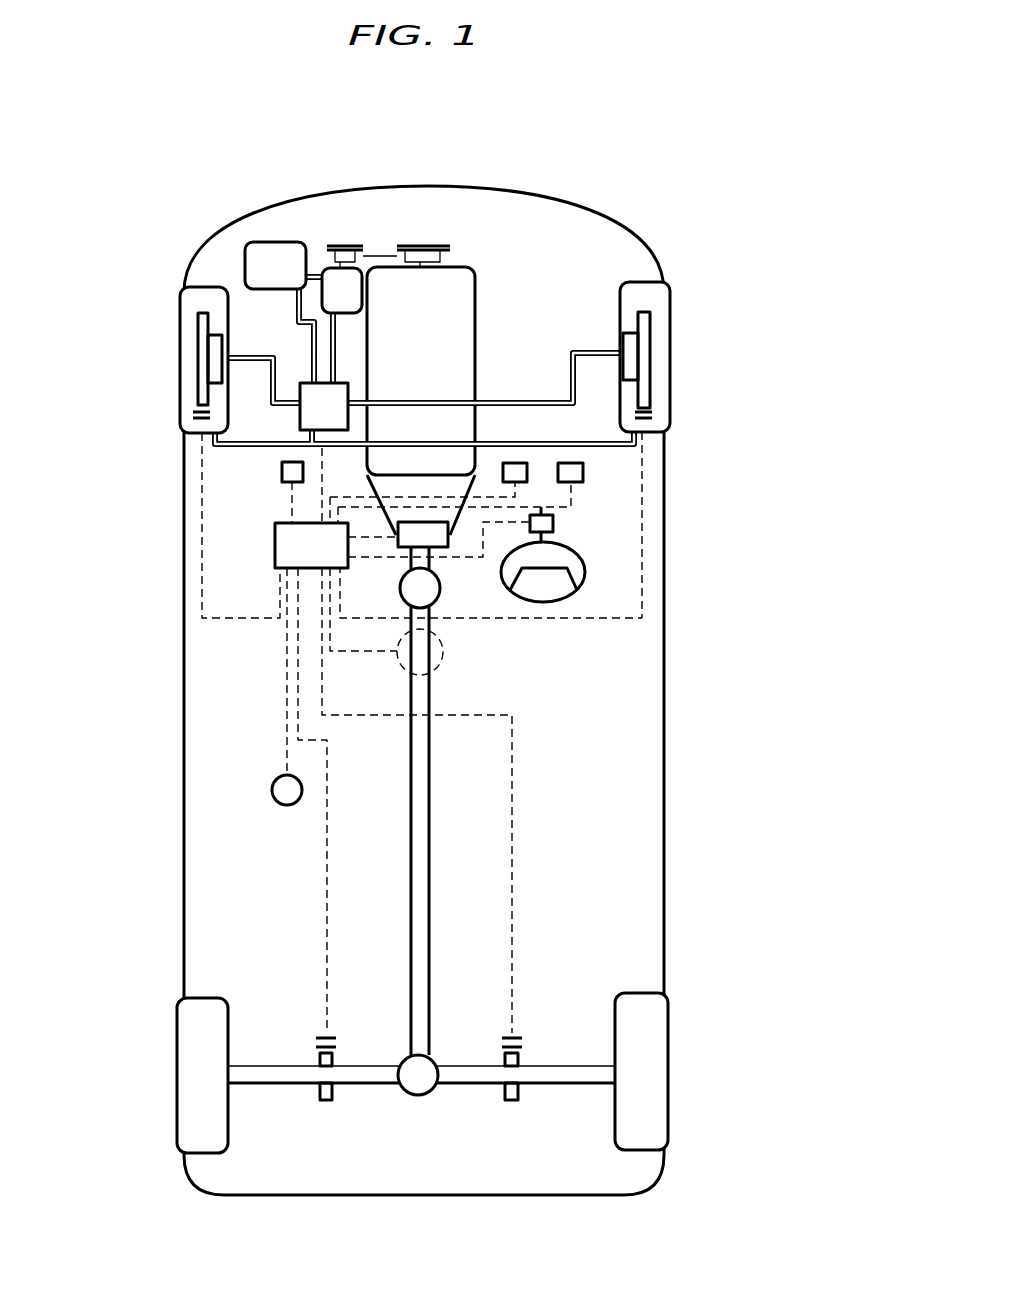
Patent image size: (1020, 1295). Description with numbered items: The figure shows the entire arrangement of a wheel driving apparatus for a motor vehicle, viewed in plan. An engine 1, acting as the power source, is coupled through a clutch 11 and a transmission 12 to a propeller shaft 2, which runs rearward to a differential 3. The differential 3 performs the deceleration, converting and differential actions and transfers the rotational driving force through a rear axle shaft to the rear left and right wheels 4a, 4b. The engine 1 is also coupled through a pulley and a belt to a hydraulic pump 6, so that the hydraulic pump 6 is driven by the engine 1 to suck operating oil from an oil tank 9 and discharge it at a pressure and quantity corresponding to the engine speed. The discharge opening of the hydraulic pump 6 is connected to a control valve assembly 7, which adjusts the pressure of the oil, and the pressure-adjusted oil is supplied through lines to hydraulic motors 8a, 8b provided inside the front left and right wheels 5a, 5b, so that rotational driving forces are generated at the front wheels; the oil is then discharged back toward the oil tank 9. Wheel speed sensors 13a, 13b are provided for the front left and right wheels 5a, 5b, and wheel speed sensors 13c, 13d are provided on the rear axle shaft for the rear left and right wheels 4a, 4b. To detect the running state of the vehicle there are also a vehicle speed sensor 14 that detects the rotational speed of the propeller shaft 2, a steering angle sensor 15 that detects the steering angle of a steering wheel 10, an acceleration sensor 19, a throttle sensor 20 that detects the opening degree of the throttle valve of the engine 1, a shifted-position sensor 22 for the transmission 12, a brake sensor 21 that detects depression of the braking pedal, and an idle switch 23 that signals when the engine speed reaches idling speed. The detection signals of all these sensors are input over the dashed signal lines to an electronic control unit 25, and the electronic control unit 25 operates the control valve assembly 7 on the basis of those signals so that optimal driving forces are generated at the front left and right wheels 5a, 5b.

The engine 1 is at (463, 298).
The propeller shaft 2 is at (422, 832).
The differential 3 is at (418, 1082).
The rear left wheel 4a is at (184, 1033).
The rear right wheel 4b is at (657, 1051).
The front left wheel 5a is at (188, 312).
The front right wheel 5b is at (655, 297).
The hydraulic pump 6 is at (333, 280).
The control valve assembly 7 is at (337, 392).
The hydraulic motor 8a is at (215, 358).
The hydraulic motor 8b is at (630, 355).
The oil tank 9 is at (260, 252).
The steering wheel 10 is at (575, 595).
The clutch 11 is at (447, 488).
The transmission 12 is at (440, 532).
The wheel speed sensor 13a is at (200, 422).
The wheel speed sensor 13b is at (652, 405).
The wheel speed sensor 13c is at (328, 1040).
The wheel speed sensor 13d is at (513, 1038).
The vehicle speed sensor 14 is at (443, 650).
The steering angle sensor 15 is at (553, 525).
The acceleration sensor 19 is at (282, 792).
The throttle sensor 20 is at (583, 472).
The brake sensor 21 is at (520, 463).
The shifted-position sensor 22 is at (398, 527).
The idle switch 23 is at (282, 470).
The electronic control unit 25 is at (275, 545).